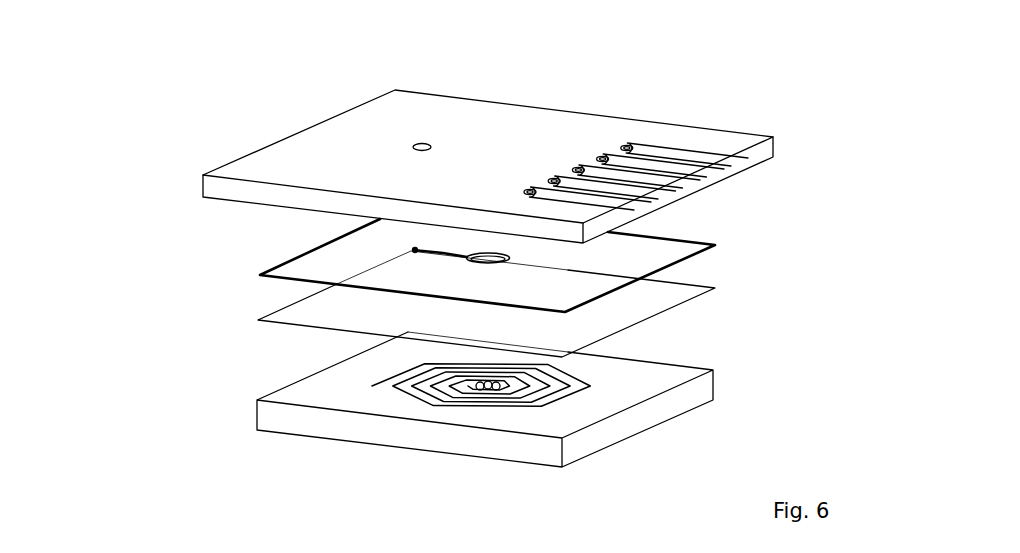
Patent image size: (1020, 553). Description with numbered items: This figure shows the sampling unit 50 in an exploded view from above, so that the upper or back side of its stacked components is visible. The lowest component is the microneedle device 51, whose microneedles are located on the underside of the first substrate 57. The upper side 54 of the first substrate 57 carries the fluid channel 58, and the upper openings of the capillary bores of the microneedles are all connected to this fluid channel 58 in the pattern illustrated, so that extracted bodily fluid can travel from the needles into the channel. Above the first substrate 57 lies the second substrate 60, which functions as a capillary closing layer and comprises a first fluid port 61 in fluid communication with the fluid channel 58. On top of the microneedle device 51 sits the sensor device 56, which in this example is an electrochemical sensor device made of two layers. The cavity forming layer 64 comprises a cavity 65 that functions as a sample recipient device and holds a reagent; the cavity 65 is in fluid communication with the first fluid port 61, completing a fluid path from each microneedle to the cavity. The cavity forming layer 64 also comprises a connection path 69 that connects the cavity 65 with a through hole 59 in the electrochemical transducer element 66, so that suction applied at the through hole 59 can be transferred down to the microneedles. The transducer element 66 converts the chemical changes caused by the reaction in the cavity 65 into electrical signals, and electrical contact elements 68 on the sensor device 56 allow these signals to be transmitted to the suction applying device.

The sampling unit 50 is at (167, 345).
The microneedle device 51 is at (777, 385).
The upper side of the first substrate 54 is at (502, 420).
The sensor device 56 is at (228, 270).
The first substrate 57 is at (707, 356).
The fluid channel 58 is at (418, 405).
The through hole 59 is at (424, 131).
The second substrate 60 is at (709, 300).
The first fluid port 61 is at (464, 310).
The cavity forming layer 64 is at (707, 231).
The cavity 65 is at (502, 269).
The electrochemical transducer element 66 is at (750, 118).
The electrical contact element 68 is at (678, 184).
The connection path 69 is at (440, 266).